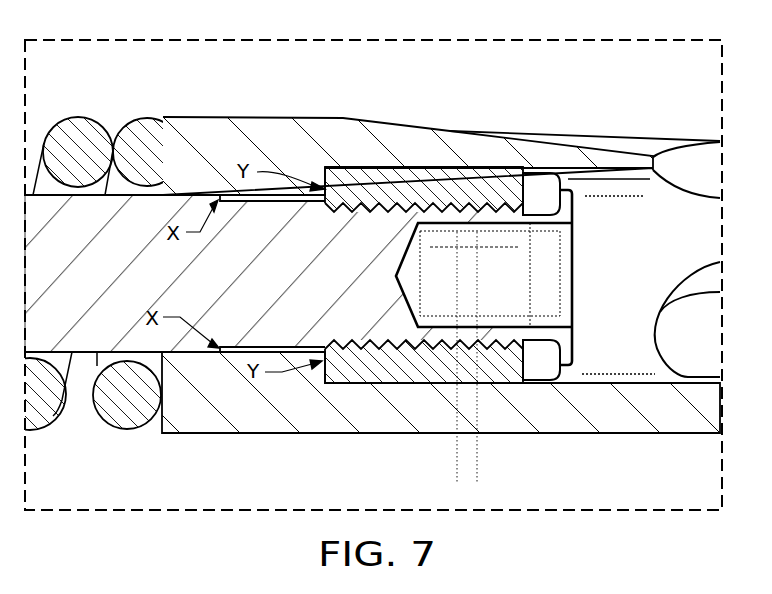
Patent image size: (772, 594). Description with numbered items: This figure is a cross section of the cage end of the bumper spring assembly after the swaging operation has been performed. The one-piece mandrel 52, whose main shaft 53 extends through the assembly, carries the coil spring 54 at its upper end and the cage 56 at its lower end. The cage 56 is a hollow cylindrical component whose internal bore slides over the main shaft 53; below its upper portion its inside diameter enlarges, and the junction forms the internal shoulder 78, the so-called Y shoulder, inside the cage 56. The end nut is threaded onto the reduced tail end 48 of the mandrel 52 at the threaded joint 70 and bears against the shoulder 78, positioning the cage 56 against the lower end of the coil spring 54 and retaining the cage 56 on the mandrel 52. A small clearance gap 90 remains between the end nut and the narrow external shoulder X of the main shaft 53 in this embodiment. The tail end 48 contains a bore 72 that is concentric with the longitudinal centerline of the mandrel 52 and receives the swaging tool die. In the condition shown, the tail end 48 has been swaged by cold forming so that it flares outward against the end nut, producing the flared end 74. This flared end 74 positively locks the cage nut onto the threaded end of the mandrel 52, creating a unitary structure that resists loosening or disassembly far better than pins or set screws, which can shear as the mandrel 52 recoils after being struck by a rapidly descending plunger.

The tail end 48 is at (576, 256).
The one-piece mandrel 52 is at (153, 288).
The main shaft 53 is at (85, 366).
The coil spring 54 is at (82, 118).
The cage 56 is at (207, 425).
The threaded joint 70 is at (416, 204).
The bore 72 is at (522, 272).
The flared end 74 is at (575, 353).
The shoulder 78 is at (411, 277).
The clearance gap 90 is at (312, 344).